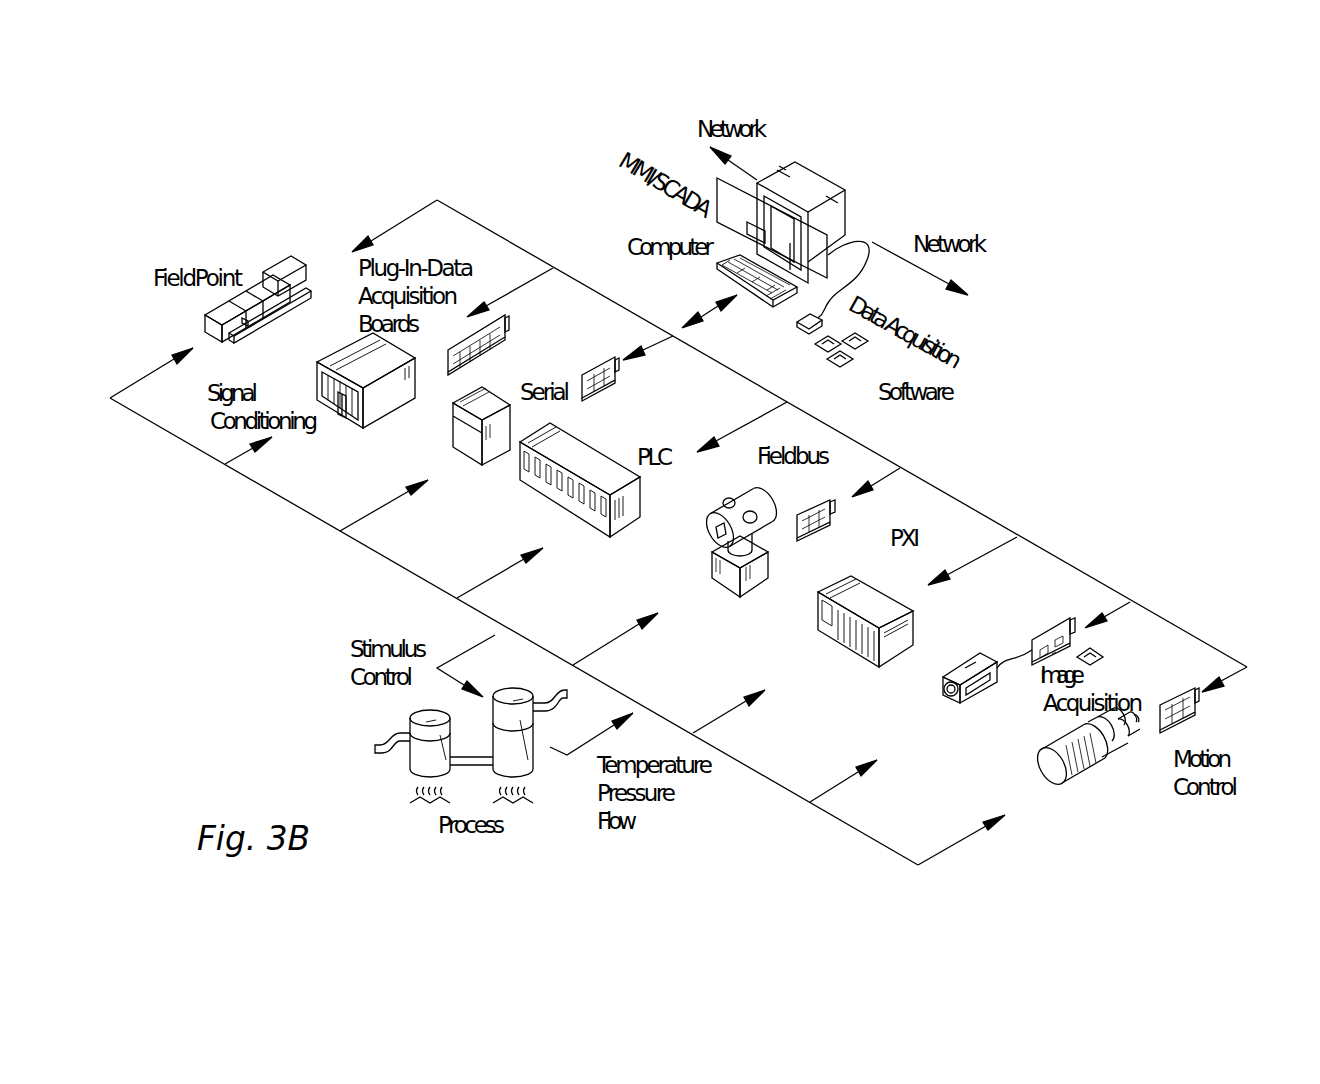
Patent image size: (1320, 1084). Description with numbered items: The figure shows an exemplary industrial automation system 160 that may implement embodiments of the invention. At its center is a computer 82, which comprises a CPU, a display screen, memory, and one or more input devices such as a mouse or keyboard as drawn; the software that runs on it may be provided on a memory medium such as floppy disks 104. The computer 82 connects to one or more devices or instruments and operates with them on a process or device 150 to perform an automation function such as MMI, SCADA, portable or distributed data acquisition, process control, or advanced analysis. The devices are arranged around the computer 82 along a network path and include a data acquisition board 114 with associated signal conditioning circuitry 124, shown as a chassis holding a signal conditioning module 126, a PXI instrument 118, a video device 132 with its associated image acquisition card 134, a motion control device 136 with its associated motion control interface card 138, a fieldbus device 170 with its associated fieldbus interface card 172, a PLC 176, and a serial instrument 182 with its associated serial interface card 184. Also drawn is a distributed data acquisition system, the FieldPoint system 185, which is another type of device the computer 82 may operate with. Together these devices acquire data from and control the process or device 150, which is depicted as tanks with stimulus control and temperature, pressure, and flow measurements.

The computer 82 is at (793, 241).
The floppy disks 104 is at (861, 384).
The data acquisition board 114 is at (505, 317).
The PXI instrument 118 is at (868, 590).
The signal conditioning circuitry 124 is at (345, 355).
The signal conditioning module 126 is at (371, 423).
The video device 132 is at (947, 701).
The image acquisition card 134 is at (1047, 630).
The motion control device 136 is at (1080, 777).
The motion control interface card 138 is at (1187, 717).
The process or device 150 is at (388, 738).
The industrial automation system 160 is at (1155, 255).
The fieldbus device 170 is at (717, 573).
The fieldbus interface card 172 is at (815, 505).
The PLC 176 is at (592, 457).
The serial instrument 182 is at (458, 442).
The serial interface card 184 is at (597, 367).
The FieldPoint system 185 is at (272, 263).